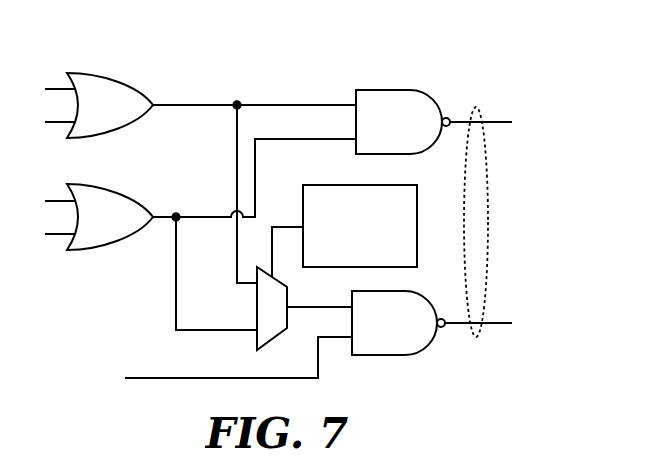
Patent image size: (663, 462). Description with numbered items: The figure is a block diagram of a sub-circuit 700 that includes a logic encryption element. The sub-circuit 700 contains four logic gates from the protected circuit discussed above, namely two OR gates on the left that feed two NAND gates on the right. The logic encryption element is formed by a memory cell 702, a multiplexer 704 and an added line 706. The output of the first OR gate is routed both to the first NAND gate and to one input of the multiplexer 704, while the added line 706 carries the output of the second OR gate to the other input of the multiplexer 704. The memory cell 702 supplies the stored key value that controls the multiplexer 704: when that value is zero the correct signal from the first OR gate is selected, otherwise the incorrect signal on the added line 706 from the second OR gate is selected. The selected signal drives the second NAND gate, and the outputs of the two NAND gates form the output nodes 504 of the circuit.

The sub-circuit 700 is at (298, 231).
The memory cell 702 is at (343, 260).
The multiplexer 704 is at (257, 340).
The added line 706 is at (176, 288).
The output nodes 504 is at (476, 107).